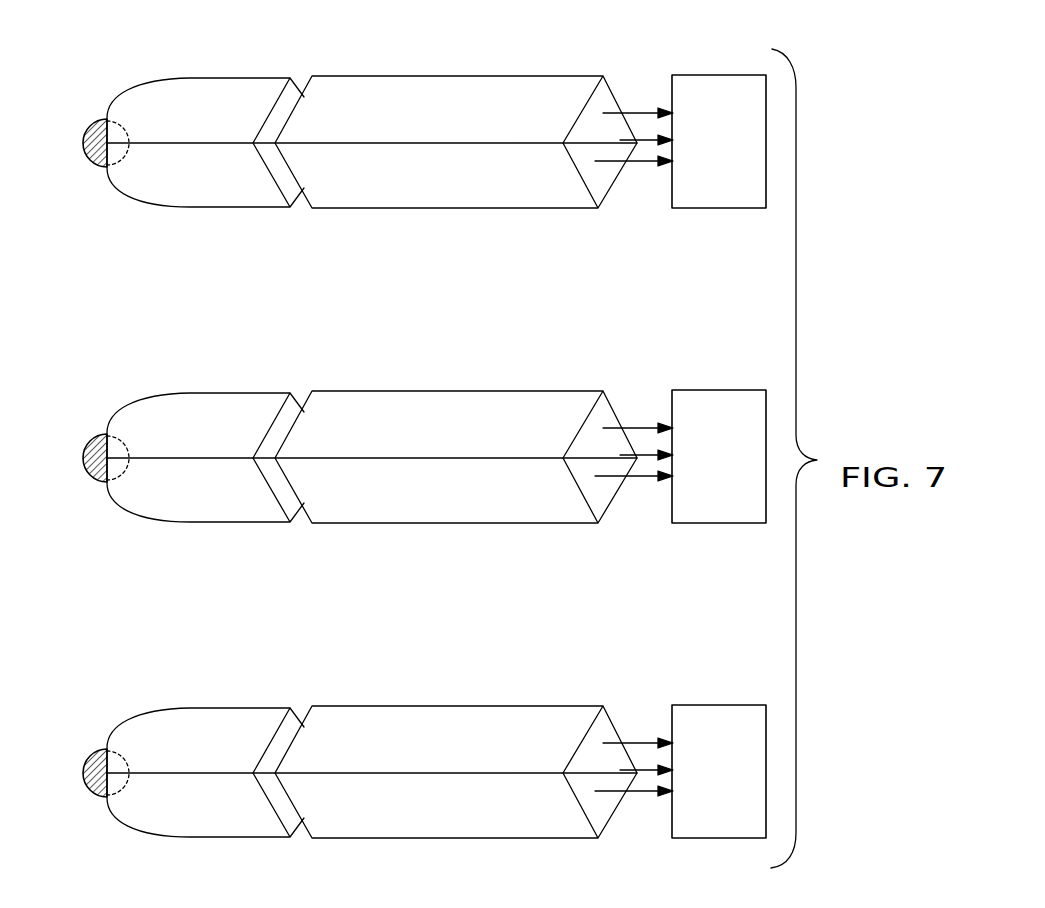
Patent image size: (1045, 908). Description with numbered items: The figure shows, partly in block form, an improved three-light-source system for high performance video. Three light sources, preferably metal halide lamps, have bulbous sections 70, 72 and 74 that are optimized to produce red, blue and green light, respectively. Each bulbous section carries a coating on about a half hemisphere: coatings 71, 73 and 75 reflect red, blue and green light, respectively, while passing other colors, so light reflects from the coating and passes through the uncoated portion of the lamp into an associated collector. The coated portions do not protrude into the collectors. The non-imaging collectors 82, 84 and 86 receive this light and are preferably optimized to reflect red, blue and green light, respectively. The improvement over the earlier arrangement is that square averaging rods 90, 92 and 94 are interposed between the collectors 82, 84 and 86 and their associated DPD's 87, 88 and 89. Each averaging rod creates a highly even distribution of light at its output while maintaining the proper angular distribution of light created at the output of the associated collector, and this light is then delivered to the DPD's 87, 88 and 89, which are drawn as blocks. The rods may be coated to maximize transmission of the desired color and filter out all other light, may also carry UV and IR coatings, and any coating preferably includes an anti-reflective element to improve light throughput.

The bulbous section 70 is at (91, 121).
The coating 71 is at (88, 162).
The bulbous section 72 is at (75, 430).
The coating 73 is at (86, 479).
The bulbous section 74 is at (75, 745).
The coating 75 is at (86, 794).
The non-imaging collector 82 is at (227, 107).
The non-imaging collector 84 is at (205, 425).
The non-imaging collector 86 is at (205, 740).
The square averaging rod 90 is at (442, 122).
The square averaging rod 92 is at (456, 457).
The square averaging rod 94 is at (456, 772).
The DPD 87 is at (732, 157).
The DPD 88 is at (719, 456).
The DPD 89 is at (719, 771).